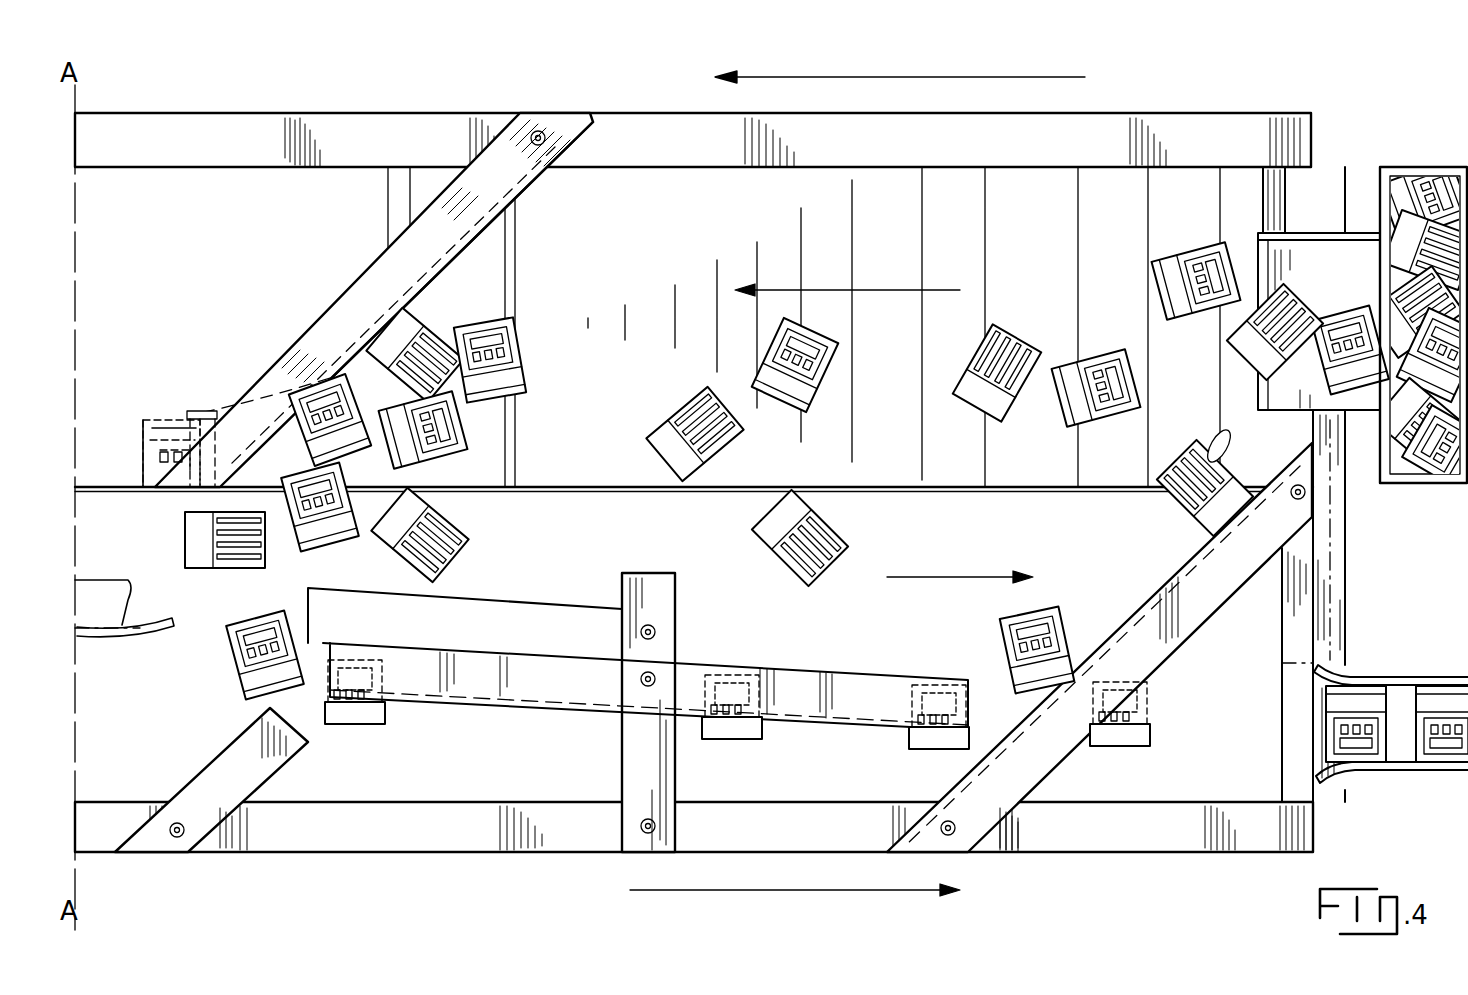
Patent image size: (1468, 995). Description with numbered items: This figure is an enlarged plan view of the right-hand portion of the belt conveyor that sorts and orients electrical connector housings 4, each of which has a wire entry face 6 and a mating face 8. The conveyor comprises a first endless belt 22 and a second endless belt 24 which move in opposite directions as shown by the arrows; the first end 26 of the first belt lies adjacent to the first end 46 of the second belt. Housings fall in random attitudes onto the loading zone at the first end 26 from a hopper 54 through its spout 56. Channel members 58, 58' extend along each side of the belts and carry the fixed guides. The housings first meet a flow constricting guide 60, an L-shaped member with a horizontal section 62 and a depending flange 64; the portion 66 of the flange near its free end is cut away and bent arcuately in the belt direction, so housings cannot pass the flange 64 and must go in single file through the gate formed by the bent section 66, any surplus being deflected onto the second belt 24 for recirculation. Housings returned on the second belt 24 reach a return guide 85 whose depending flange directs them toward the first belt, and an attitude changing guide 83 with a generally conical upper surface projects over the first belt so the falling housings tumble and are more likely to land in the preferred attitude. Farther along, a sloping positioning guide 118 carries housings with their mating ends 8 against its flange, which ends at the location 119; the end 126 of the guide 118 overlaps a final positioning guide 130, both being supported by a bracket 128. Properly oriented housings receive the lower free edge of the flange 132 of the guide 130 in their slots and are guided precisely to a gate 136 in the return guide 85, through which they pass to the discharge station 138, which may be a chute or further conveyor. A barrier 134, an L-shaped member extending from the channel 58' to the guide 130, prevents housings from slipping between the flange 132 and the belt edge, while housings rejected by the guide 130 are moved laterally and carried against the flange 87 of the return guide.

The electrical connector housing 4 is at (148, 422).
The wire entry face 6 is at (933, 752).
The mating face 8 is at (400, 555).
The first endless belt 22 is at (259, 205).
The second endless belt 24 is at (510, 778).
The first end of the first belt 26 is at (1200, 185).
The first end of the second belt 46 is at (1232, 768).
The hopper 54 is at (1407, 485).
The spout 56 is at (1328, 250).
The channel member 58 is at (653, 83).
The channel member 58' is at (1043, 888).
The flow constricting guide 60 is at (344, 280).
The horizontal section 62 is at (531, 187).
The depending flange 64 is at (475, 232).
The arcuately bent section 66 is at (205, 410).
The attitude changing guide 83 is at (1210, 437).
The return guide 85 is at (1198, 624).
The flange of the return guide 87 is at (1172, 578).
The positioning guide 118 is at (105, 576).
The end of the flange 119 is at (128, 641).
The end of the positioning guide 126 is at (603, 610).
The bracket 128 is at (672, 768).
The final positioning guide 130 is at (780, 672).
The flange of the final positioning guide 132 is at (540, 705).
The barrier 134 is at (304, 754).
The gate 136 is at (1010, 725).
The discharge station 138 is at (1388, 672).